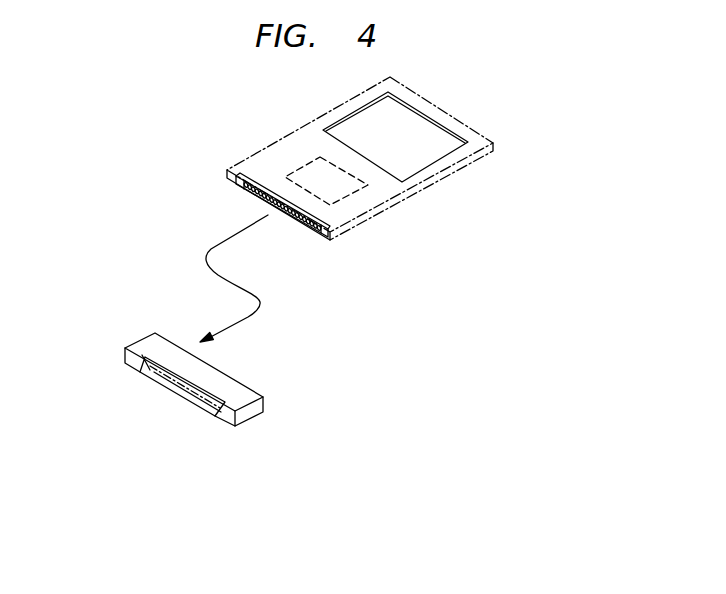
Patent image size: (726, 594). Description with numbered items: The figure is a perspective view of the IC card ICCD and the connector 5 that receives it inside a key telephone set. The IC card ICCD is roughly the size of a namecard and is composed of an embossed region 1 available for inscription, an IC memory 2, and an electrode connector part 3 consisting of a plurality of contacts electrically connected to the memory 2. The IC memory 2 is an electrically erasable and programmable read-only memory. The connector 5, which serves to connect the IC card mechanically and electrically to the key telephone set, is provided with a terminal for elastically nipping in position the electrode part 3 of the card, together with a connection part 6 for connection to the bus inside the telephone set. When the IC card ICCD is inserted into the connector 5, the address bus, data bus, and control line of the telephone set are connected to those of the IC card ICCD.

The embossed region 1 is at (412, 122).
The IC memory 2 is at (308, 173).
The electrode connector part 3 is at (263, 190).
The connector 5 is at (251, 421).
The connection part 6 is at (211, 417).
The IC card ICCD is at (372, 225).